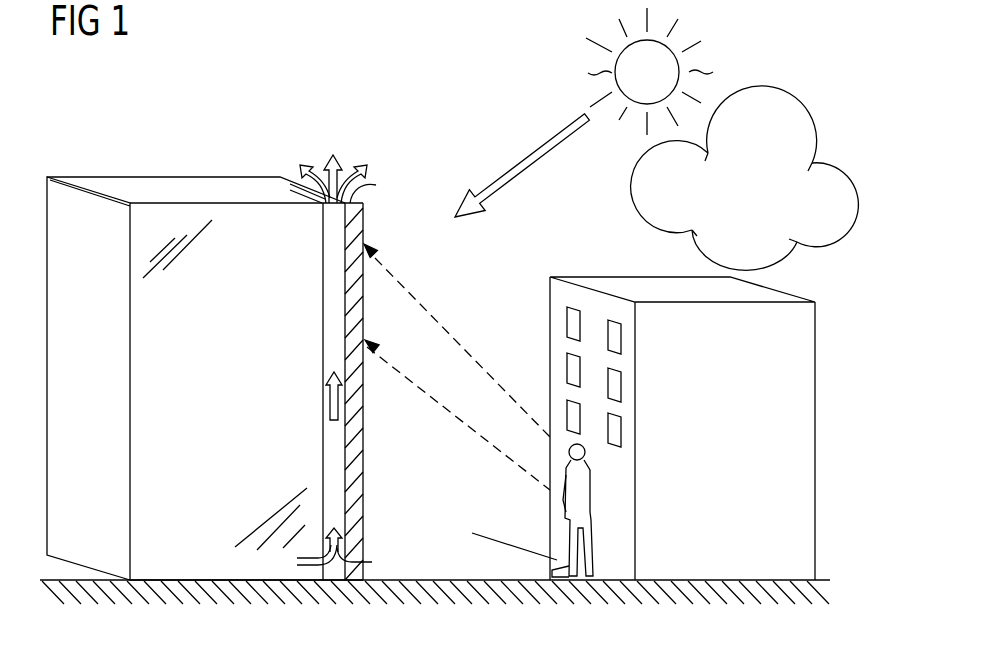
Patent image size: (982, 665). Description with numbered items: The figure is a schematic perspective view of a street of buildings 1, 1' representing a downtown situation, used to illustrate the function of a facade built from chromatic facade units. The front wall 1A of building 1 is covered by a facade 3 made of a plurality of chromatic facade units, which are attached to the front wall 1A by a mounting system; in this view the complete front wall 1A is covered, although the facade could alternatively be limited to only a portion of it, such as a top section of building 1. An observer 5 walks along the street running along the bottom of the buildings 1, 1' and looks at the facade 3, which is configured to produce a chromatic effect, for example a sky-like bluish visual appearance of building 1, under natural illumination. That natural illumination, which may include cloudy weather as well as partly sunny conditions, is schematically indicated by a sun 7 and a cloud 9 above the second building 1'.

The building 1 is at (205, 336).
The front wall 1A is at (388, 150).
The facade 3 is at (378, 215).
The building 1' is at (682, 395).
The observer 5 is at (596, 478).
The sun 7 is at (615, 62).
The cloud 9 is at (786, 130).